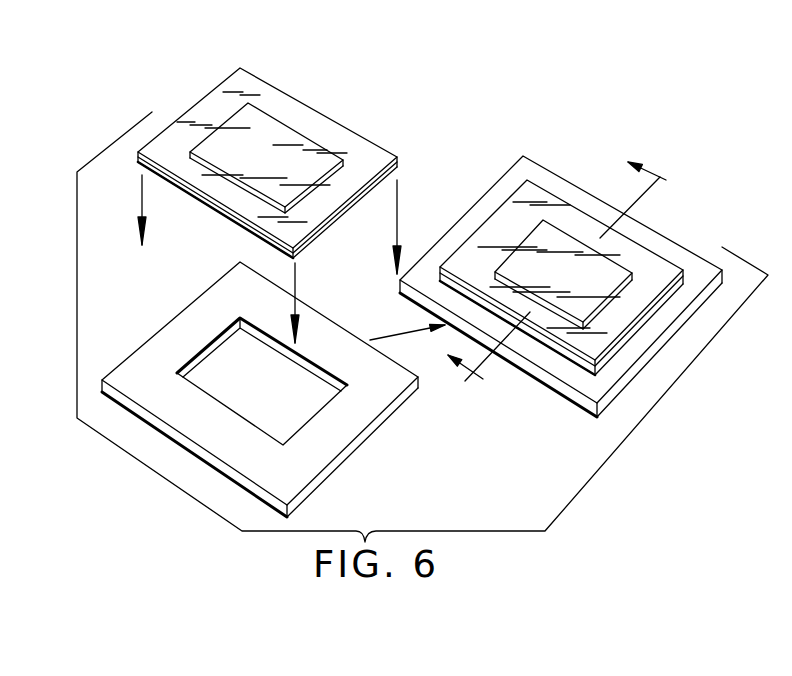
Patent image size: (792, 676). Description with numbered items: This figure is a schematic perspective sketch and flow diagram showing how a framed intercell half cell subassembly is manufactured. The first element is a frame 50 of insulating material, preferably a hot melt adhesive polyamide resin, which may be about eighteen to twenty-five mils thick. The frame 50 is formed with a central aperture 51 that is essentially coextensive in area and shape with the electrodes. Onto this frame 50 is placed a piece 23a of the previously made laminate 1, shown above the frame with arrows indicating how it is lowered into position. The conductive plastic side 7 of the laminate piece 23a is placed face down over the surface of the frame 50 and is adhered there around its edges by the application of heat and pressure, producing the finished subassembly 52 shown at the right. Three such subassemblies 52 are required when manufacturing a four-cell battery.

The substrate plate 1 is at (363, 153).
The piece of laminate 23a is at (182, 197).
The frame 50 is at (410, 391).
The central aperture 51 is at (304, 368).
The subassembly 52 is at (542, 390).
The conductive plastic side 7 is at (657, 275).